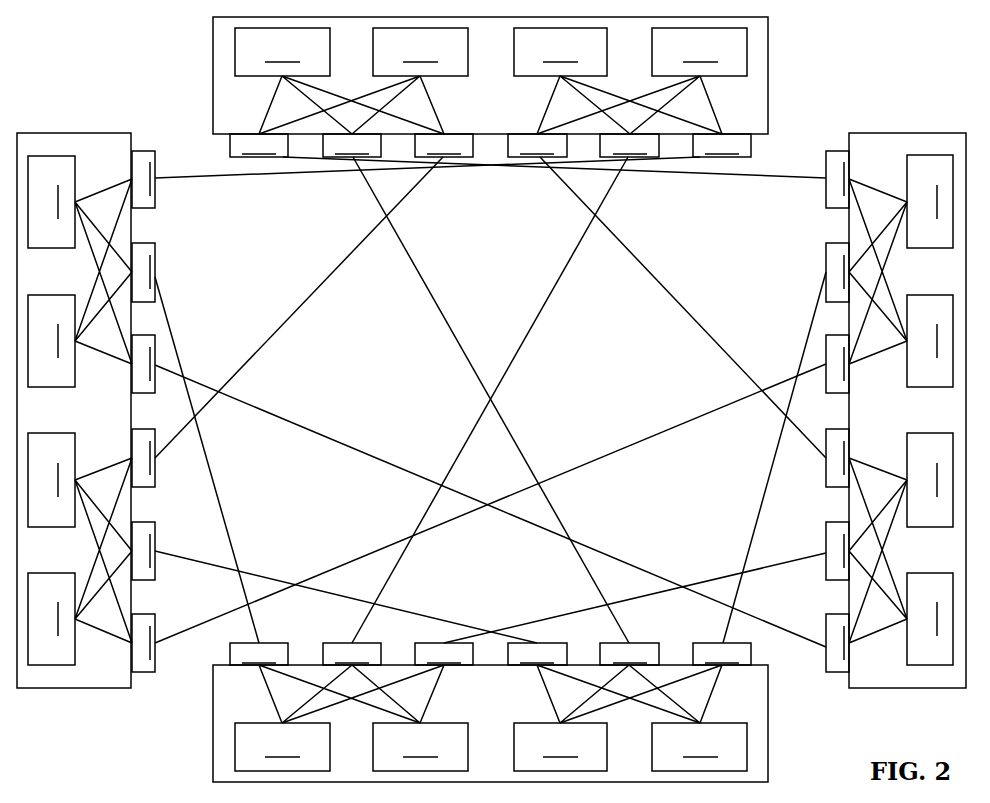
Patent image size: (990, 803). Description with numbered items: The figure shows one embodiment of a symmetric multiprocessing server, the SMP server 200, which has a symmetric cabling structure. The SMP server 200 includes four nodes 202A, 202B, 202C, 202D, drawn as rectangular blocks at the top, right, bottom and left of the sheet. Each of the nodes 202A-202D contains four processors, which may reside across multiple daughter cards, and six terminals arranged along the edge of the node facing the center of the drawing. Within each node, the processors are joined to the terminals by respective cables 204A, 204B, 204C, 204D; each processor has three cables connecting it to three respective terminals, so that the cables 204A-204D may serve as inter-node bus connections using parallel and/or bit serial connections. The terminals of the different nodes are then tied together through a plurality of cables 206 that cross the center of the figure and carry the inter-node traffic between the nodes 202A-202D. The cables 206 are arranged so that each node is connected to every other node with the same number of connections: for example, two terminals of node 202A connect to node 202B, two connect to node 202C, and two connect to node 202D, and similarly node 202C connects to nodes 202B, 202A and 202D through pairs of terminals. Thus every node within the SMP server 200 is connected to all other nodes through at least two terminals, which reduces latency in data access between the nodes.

The SMP server 200 is at (869, 64).
The node 202A is at (515, 110).
The node 202B is at (910, 419).
The node 202C is at (515, 702).
The node 202D is at (95, 419).
The cables 204A is at (641, 69).
The cables 204B is at (889, 284).
The cables 204C is at (621, 769).
The cables 204D is at (93, 284).
The cables 206 is at (517, 448).